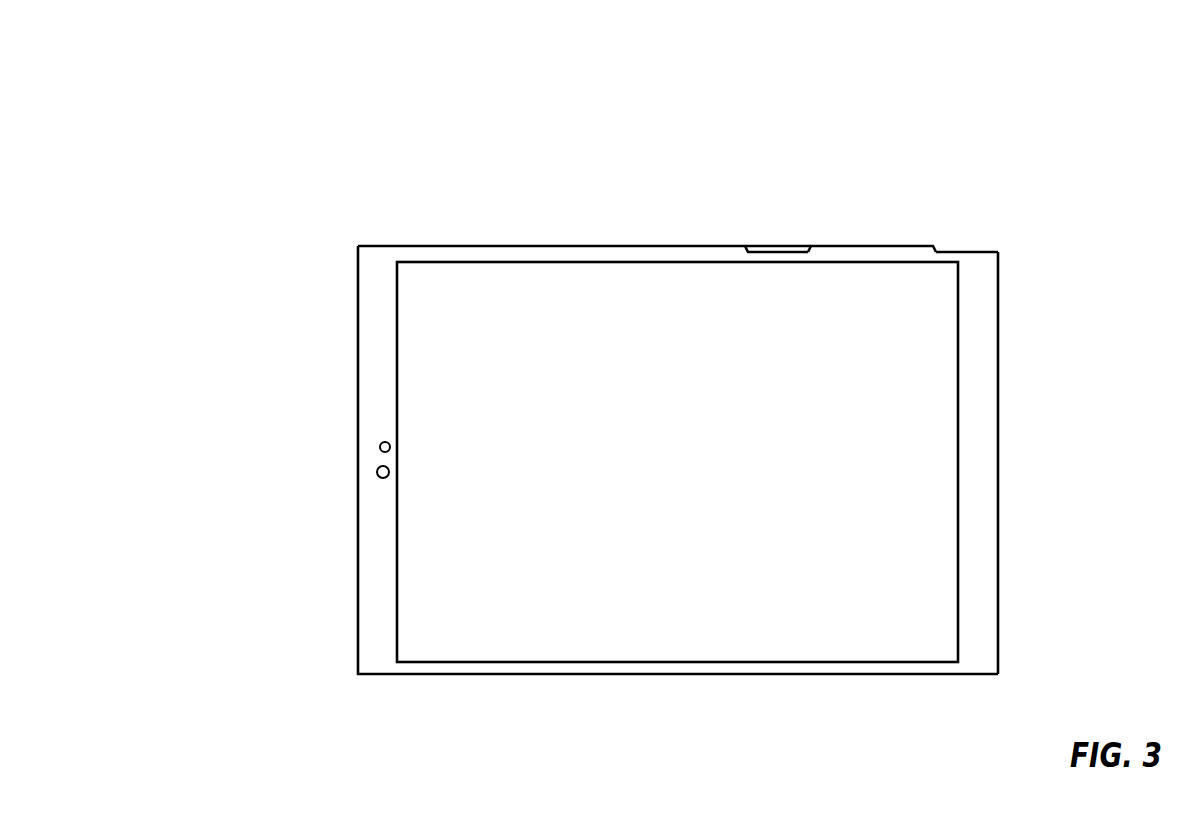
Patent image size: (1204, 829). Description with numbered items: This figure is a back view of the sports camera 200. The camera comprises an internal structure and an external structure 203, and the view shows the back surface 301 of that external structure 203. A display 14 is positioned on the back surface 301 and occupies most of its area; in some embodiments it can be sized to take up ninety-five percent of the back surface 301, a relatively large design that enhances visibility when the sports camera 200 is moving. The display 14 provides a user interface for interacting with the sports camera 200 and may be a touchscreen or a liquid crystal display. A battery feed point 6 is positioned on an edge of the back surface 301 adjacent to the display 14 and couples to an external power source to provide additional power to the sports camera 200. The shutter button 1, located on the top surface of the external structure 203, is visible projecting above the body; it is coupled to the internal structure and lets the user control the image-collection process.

The shutter button 1 is at (932, 245).
The battery feed point 6 is at (383, 445).
The display 14 is at (458, 517).
The sports camera 200 is at (1032, 207).
The external structure 203 is at (998, 398).
The back surface 301 is at (978, 542).